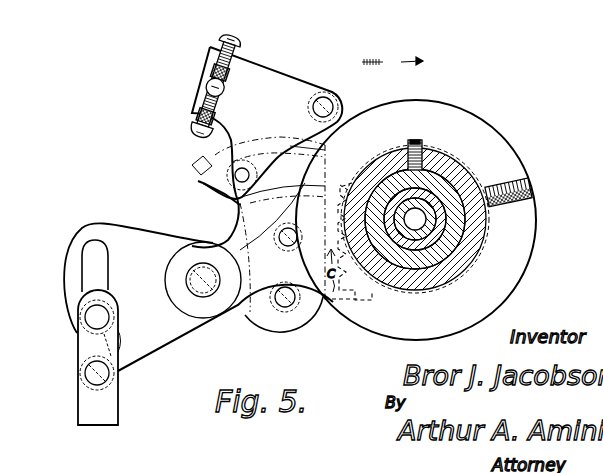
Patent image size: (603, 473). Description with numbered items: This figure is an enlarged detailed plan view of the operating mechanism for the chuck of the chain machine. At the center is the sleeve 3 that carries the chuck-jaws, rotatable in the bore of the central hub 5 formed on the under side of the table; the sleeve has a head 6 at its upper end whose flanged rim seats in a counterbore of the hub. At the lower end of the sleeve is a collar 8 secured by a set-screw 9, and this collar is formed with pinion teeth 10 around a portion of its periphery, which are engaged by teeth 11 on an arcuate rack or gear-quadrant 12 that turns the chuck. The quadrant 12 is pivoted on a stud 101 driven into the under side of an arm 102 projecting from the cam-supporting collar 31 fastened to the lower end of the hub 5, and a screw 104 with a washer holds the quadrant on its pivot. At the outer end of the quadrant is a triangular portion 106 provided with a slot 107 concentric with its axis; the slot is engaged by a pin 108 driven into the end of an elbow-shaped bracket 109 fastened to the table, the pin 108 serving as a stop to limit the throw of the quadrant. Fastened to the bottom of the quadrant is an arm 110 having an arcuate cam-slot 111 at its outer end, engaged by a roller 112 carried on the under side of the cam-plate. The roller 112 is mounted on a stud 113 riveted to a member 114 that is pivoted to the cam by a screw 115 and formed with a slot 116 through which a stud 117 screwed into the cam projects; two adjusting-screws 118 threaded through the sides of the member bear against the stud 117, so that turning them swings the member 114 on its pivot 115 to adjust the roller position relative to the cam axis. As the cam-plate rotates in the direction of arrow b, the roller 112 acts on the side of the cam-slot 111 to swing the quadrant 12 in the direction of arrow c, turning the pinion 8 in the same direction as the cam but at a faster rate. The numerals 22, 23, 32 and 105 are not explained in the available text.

The sleeve 3 is at (440, 255).
The central hub 5 is at (463, 253).
The head 6 is at (392, 63).
The collar 8 is at (425, 150).
The set-screw 9 is at (420, 142).
The pinion teeth 10 is at (344, 193).
The teeth 11 is at (347, 300).
The gear-quadrant 12 is at (327, 303).
The hub 22 is at (415, 238).
The hub flange 23 is at (428, 246).
The cam-supporting collar 31 is at (503, 220).
The stud 32 is at (534, 193).
The stud 101 is at (197, 287).
The arm 102 is at (268, 276).
The screw 104 is at (186, 280).
The pawl lever 105 is at (242, 274).
The triangular portion 106 is at (70, 288).
The slot 107 is at (84, 257).
The pin 108 is at (85, 317).
The elbow-shaped bracket 109 is at (87, 340).
The arm 110 is at (199, 181).
The cam-slot 111 is at (206, 163).
The roller 112 is at (230, 182).
The stud 113 is at (224, 193).
The member 114 is at (270, 111).
The screw 115 is at (324, 106).
The slot 116 is at (228, 75).
The stud 117 is at (227, 91).
The adjusting-screws 118 is at (236, 44).